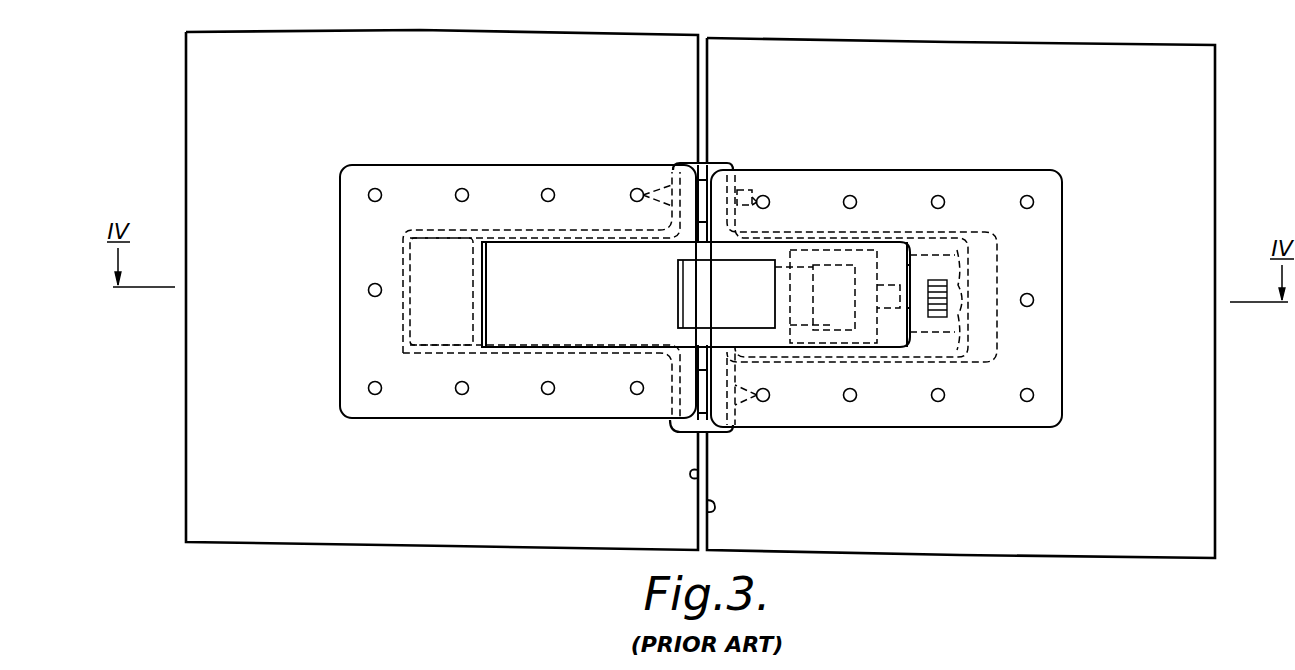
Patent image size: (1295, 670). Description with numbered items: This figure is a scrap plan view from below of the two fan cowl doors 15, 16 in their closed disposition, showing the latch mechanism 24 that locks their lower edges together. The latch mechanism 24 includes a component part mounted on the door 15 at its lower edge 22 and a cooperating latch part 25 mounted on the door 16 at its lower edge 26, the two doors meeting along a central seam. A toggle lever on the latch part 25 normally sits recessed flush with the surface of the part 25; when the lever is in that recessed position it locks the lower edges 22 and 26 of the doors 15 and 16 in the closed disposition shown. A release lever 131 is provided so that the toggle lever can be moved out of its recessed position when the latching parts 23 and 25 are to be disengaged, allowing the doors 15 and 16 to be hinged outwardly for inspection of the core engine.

The release lever 131 is at (695, 287).
The cooperating latch part 25 is at (520, 200).
The latching part 23 is at (800, 200).
The latch mechanism 24 is at (663, 429).
The lower edge of door 15 (component part) 22 is at (700, 470).
The lower edge of door 16 26 is at (700, 503).
The fan cowl door 16 is at (375, 493).
The fan cowl door 15 is at (1030, 507).